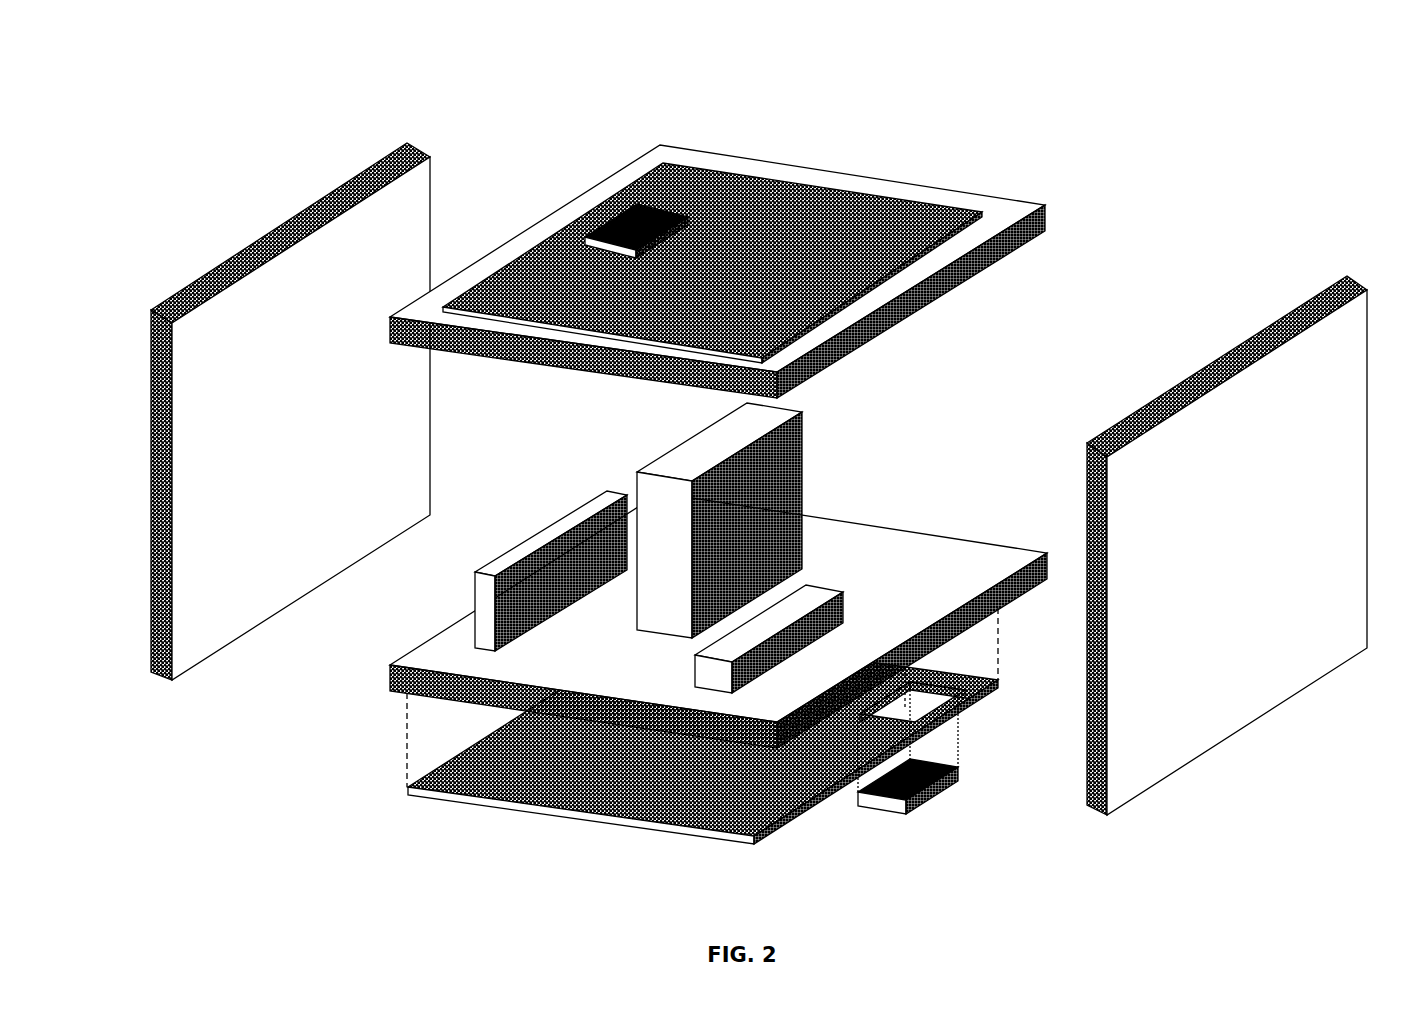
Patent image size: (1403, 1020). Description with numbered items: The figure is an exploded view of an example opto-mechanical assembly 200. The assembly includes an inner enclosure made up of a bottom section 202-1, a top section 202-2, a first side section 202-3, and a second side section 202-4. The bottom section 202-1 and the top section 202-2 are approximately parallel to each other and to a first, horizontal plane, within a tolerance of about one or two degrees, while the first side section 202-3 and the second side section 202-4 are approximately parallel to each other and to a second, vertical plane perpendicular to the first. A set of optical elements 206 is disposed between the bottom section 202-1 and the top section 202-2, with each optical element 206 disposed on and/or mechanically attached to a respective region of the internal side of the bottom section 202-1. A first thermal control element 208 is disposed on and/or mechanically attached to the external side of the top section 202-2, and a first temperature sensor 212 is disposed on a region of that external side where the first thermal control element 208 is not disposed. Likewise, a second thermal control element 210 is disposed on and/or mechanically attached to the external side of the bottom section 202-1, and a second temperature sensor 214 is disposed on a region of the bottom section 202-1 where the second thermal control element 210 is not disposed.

The opto-mechanical assembly 200 is at (258, 70).
The bottom section 202-1 is at (400, 684).
The top section 202-2 is at (987, 225).
The first side section 202-3 is at (220, 562).
The second side section 202-4 is at (1229, 667).
The set of optical elements 206 is at (553, 568).
The first thermal control element 208 is at (775, 228).
The second thermal control element 210 is at (642, 762).
The first temperature sensor 212 is at (645, 200).
The second temperature sensor 214 is at (945, 787).